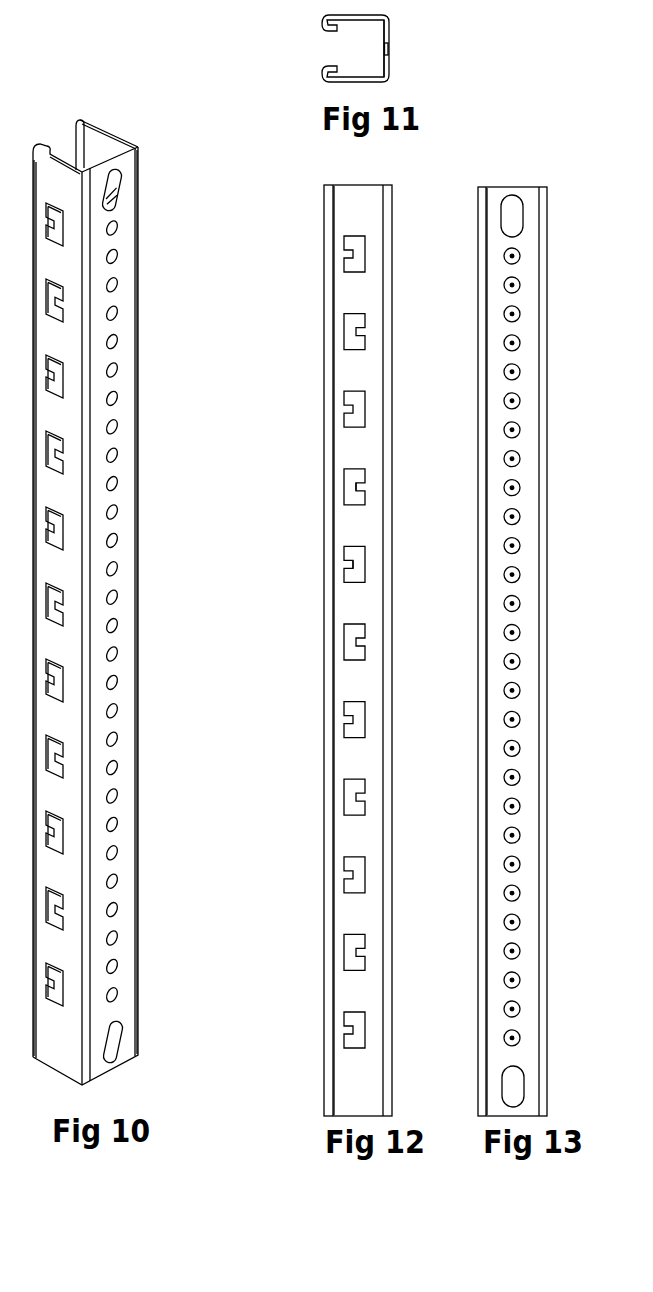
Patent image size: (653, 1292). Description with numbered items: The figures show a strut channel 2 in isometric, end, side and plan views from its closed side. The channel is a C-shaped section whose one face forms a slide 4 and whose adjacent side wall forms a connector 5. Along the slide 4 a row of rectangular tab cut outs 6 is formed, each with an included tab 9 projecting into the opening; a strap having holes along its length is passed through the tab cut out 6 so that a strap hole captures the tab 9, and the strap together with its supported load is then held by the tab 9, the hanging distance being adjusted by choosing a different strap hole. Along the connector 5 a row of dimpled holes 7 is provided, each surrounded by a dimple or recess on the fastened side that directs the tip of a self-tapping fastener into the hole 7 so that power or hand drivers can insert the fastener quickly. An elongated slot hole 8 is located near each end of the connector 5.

In FIG. 10, the strut channel 2 is at (147, 106).
In FIG. 11, the strut channel 2 is at (272, 40).
In FIG. 12, the strut channel 2 is at (350, 167).
In FIG. 13, the strut channel 2 is at (508, 166).
In FIG. 10, the slide 4 is at (46, 608).
In FIG. 12, the slide 4 is at (344, 650).
In FIG. 10, the connector 5 is at (102, 383).
In FIG. 11, the connector 5 is at (393, 67).
In FIG. 13, the connector 5 is at (527, 293).
In FIG. 10, the tab cut out 6 is at (17, 490).
In FIG. 12, the tab cut out 6 is at (352, 583).
In FIG. 10, the dimpled hole 7 is at (118, 255).
In FIG. 11, the dimpled hole 7 is at (382, 50).
In FIG. 13, the dimpled hole 7 is at (514, 396).
In FIG. 10, the slot hole 8 is at (120, 1047).
In FIG. 13, the slot hole 8 is at (502, 1085).
In FIG. 12, the tab 9 is at (356, 486).